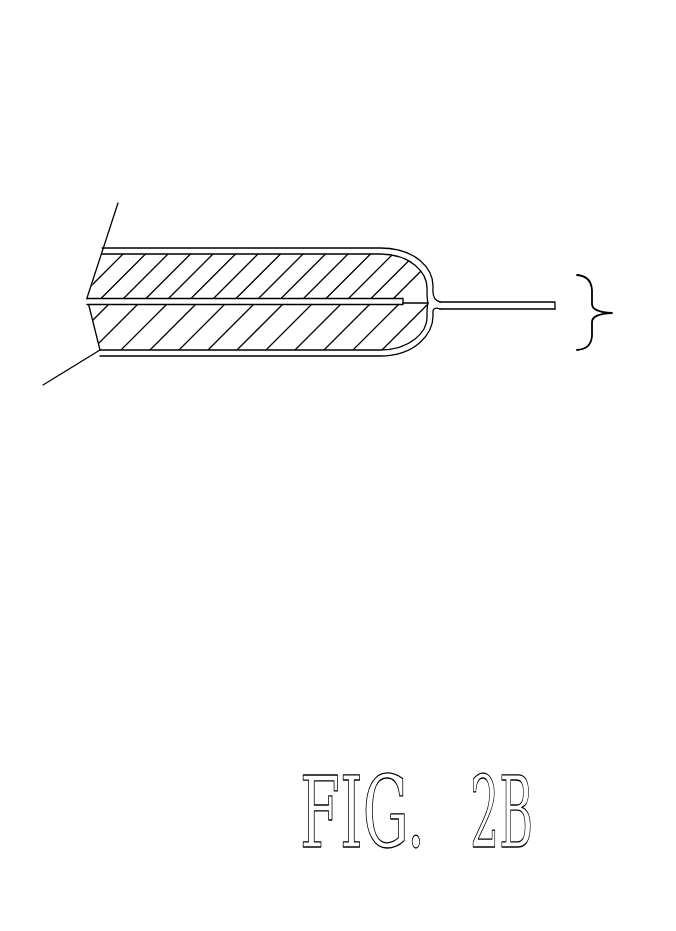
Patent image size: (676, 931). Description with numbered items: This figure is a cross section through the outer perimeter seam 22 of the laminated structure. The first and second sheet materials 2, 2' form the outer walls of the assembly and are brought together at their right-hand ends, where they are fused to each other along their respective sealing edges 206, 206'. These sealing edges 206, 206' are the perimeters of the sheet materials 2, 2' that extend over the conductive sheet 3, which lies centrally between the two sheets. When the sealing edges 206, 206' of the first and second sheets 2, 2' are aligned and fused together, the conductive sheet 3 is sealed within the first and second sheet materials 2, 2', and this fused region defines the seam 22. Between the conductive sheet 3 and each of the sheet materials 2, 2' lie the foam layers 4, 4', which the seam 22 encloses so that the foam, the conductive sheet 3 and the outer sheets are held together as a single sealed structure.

The first sheet material 2 is at (263, 184).
The second sheet material 2' is at (241, 429).
The conductive sheet 3 is at (323, 300).
The foam layer 4 is at (236, 158).
The foam layer 4' is at (230, 436).
The sealing edge 206 is at (543, 179).
The sealing edge 206' is at (497, 424).
The outer perimeter seam 22 is at (619, 312).